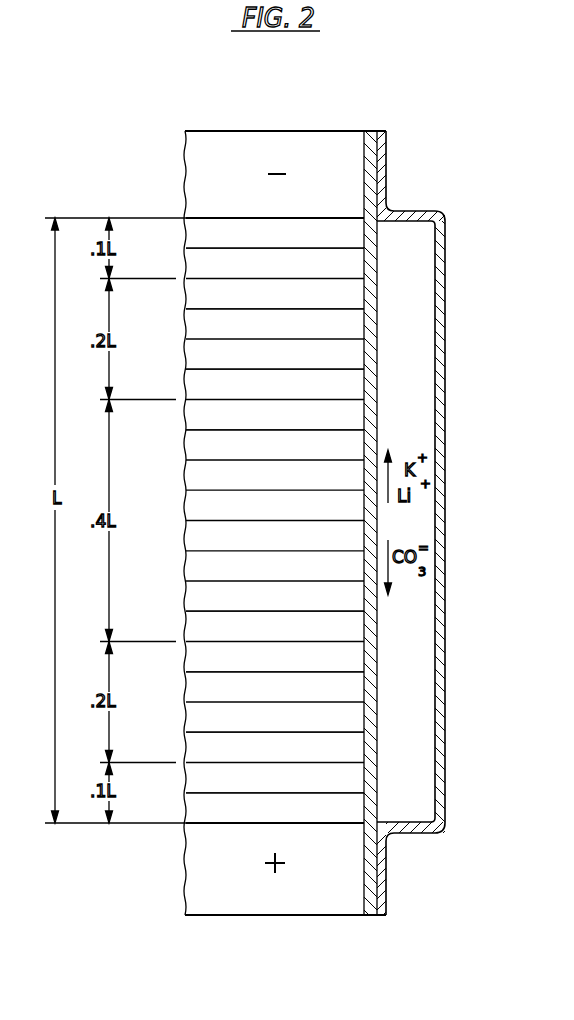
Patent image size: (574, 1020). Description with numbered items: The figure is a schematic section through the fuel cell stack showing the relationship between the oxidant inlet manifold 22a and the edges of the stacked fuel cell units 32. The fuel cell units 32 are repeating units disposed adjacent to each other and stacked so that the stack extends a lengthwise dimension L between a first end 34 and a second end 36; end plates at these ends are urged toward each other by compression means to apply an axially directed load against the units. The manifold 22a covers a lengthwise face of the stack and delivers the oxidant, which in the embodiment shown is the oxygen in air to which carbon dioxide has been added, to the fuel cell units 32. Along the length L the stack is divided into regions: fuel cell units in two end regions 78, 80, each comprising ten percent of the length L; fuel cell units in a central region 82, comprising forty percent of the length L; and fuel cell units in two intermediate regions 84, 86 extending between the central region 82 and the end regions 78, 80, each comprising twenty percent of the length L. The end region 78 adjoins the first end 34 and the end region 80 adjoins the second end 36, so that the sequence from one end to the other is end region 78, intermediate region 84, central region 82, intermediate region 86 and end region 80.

The oxidant inlet manifold 22a is at (441, 212).
The fuel cell units 32 is at (297, 302).
The first end 34 is at (317, 218).
The second end 36 is at (278, 826).
The end region 78 is at (176, 218).
The intermediate region 84 is at (176, 278).
The central region 82 is at (176, 400).
The intermediate region 86 is at (176, 642).
The end region 80 is at (176, 762).